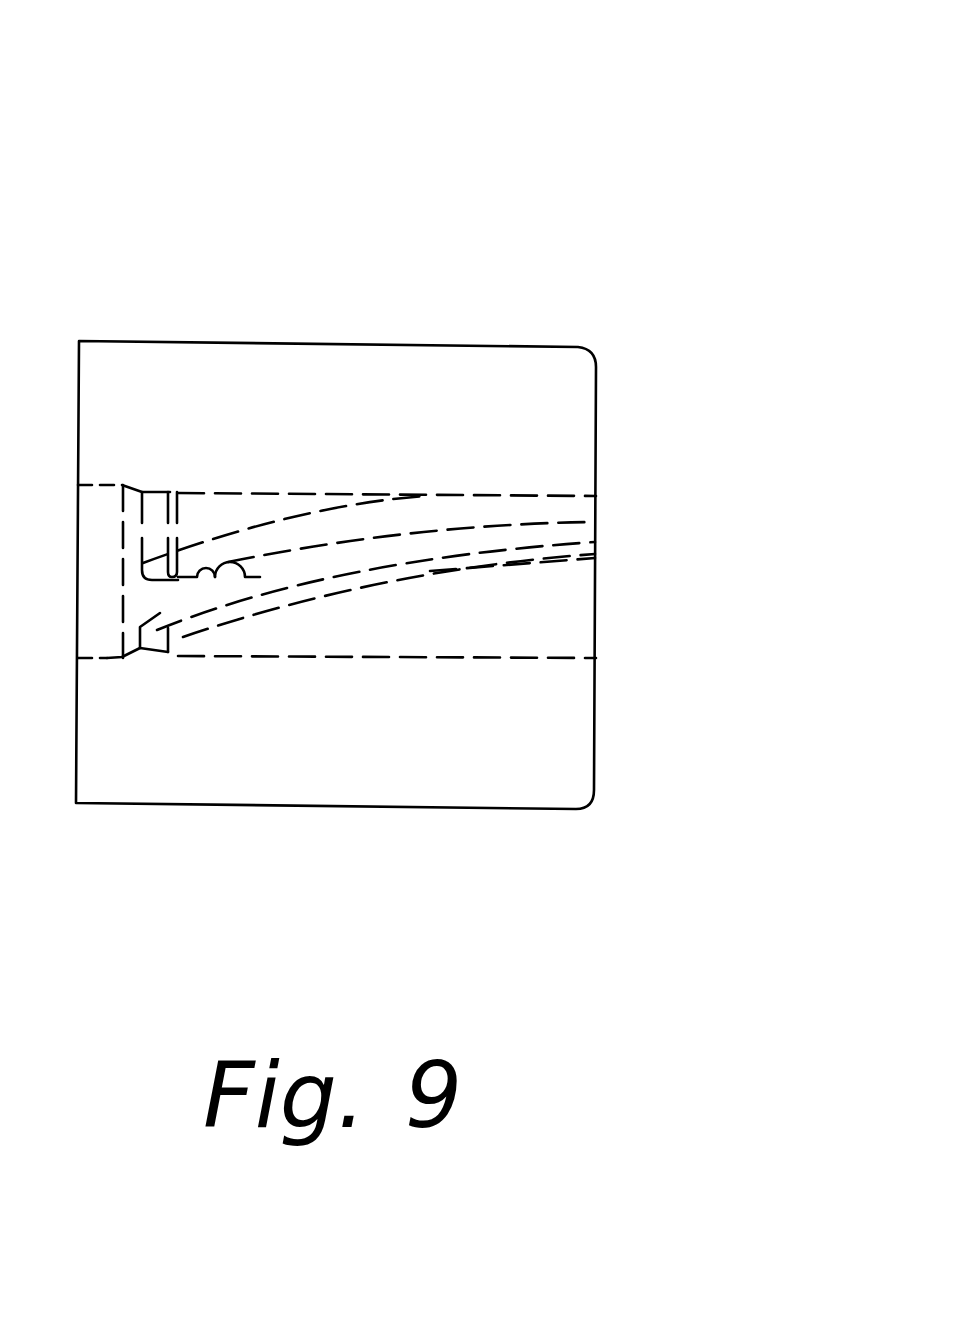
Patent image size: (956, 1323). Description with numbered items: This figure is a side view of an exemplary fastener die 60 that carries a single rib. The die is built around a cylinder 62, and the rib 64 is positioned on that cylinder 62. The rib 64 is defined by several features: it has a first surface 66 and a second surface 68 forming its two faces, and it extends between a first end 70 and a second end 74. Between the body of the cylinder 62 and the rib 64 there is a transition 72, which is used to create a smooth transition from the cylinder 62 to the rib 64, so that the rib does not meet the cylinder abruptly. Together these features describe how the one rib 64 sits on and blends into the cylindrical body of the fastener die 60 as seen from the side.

The fastener die 60 is at (392, 155).
The cylinder 62 is at (245, 492).
The first surface 66 is at (425, 515).
The rib 64 is at (513, 525).
The second end 74 is at (596, 529).
The second surface 68 is at (483, 562).
The first end 70 is at (183, 585).
The transition 72 is at (210, 584).